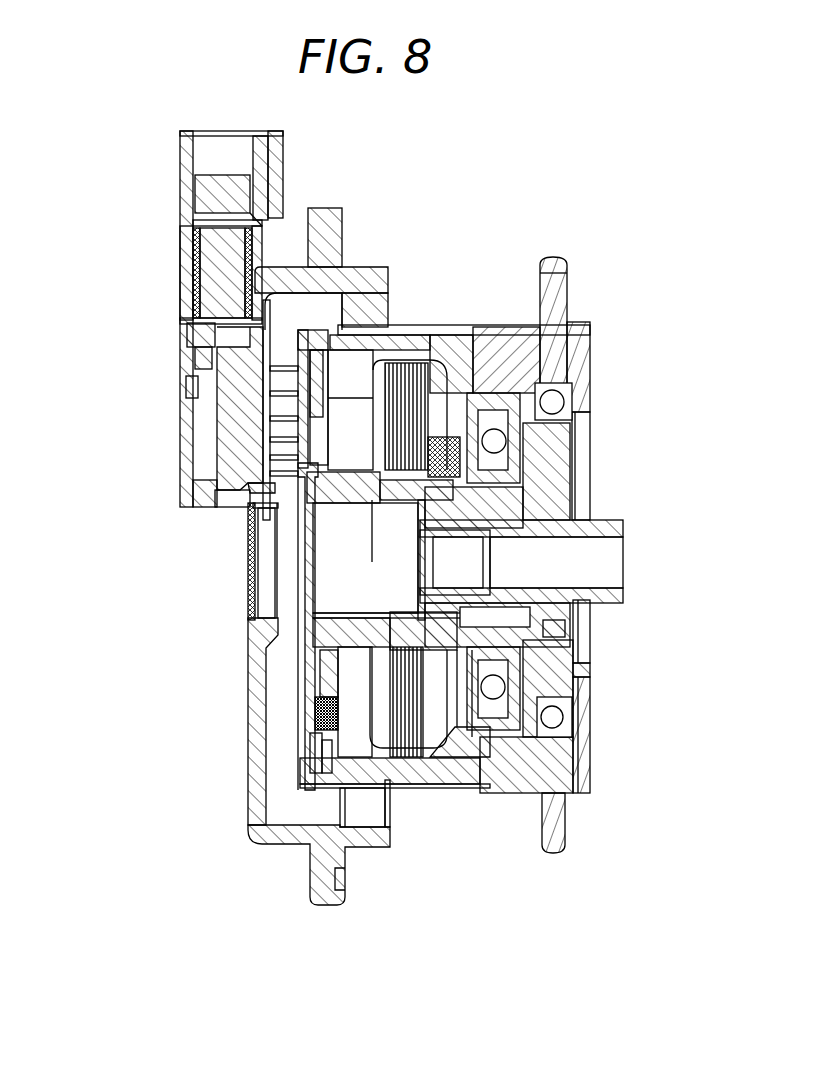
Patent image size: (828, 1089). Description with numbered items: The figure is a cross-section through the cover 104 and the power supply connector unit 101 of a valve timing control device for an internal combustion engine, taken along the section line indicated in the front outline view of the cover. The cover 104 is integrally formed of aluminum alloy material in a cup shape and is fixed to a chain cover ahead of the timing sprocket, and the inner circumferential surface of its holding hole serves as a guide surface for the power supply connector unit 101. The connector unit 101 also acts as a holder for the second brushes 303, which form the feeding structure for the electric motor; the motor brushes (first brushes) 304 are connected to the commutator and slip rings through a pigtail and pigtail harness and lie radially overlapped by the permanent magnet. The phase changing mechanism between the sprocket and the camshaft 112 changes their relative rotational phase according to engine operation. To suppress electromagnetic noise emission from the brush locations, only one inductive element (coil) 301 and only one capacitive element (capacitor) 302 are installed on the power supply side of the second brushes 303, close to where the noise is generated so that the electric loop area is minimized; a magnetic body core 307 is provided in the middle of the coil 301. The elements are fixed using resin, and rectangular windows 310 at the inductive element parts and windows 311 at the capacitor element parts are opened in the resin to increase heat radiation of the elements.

The power supply connector unit 101 is at (180, 156).
The inductive element (coil) 301 is at (185, 242).
The magnetic body core 307 is at (185, 283).
The windows 310 is at (195, 303).
The capacitive element (capacitor) 302 is at (193, 378).
The windows 311 is at (185, 393).
The second brushes 303 is at (285, 380).
The motor brush (first brush) 304 is at (357, 430).
The camshaft 112 is at (555, 573).
The cover 104 is at (250, 756).